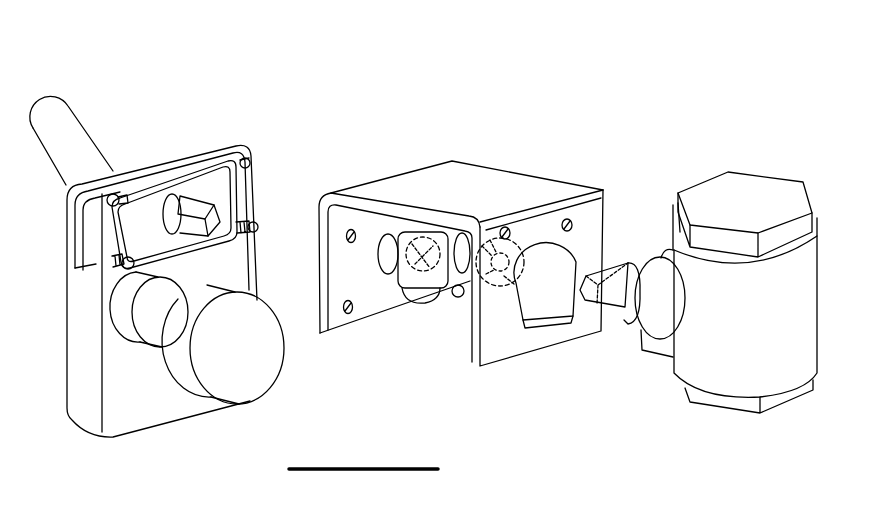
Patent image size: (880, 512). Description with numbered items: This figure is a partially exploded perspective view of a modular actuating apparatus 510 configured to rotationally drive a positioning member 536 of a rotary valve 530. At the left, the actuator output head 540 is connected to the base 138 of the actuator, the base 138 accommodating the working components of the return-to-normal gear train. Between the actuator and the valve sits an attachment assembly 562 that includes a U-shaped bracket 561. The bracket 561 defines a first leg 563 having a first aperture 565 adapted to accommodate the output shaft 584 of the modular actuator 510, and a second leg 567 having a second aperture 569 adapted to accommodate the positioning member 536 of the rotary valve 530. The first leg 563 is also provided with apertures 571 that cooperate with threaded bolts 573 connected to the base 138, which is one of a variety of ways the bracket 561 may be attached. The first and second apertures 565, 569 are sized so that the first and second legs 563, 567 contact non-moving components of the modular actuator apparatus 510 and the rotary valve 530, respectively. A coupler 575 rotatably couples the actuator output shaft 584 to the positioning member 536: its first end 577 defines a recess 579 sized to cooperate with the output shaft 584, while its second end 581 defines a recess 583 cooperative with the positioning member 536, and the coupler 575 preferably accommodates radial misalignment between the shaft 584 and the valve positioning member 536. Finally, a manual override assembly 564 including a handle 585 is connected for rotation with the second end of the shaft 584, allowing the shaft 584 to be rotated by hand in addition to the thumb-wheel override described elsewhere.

The modular actuating apparatus 510 is at (320, 91).
The rotary valve 530 is at (750, 171).
The positioning member 536 is at (615, 283).
The actuator output head 540 is at (160, 154).
The U-shaped bracket 561 is at (517, 181).
The attachment assembly 562 is at (507, 67).
The first leg 563 is at (372, 305).
The manual override assembly 564 is at (152, 94).
The first aperture 565 is at (378, 230).
The second leg 567 is at (503, 340).
The second aperture 569 is at (557, 330).
The apertures 571 is at (345, 300).
The threaded bolts 573 is at (257, 231).
The coupler 575 is at (449, 296).
The first end 577 is at (447, 300).
The recess 579 is at (409, 222).
The second end 581 is at (543, 323).
The recess 583 is at (524, 252).
The output shaft 584 is at (197, 210).
The handle 585 is at (50, 121).
The base 138 is at (131, 440).